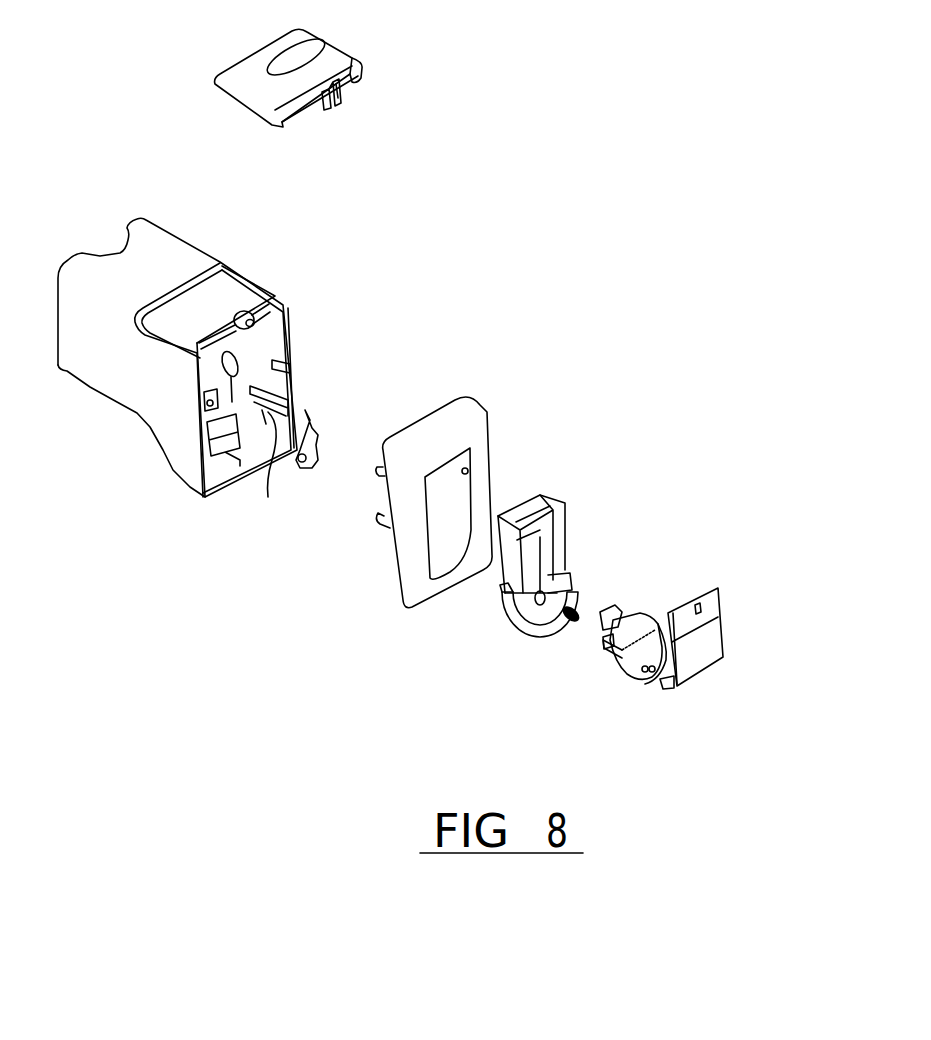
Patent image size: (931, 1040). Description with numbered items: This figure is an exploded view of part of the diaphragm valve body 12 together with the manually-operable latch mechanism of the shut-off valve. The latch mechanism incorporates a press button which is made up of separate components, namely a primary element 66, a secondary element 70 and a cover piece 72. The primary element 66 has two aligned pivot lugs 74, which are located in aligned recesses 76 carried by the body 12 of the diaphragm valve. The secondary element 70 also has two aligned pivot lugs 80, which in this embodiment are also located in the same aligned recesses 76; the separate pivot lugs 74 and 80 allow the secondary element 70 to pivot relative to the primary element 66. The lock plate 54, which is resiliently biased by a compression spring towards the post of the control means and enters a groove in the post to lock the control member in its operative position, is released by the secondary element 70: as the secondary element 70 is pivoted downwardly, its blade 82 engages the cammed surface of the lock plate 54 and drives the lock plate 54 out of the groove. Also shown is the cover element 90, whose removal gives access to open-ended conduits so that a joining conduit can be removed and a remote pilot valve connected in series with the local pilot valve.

The body 12 is at (150, 410).
The lock plate 54 is at (320, 430).
The primary element 66 is at (543, 500).
The secondary element 70 is at (640, 613).
The cover piece 72 is at (707, 641).
The pivot lugs 74 is at (503, 593).
The aligned recesses 76 is at (230, 432).
The pivot lugs 80 is at (603, 645).
The blade 82 is at (603, 607).
The cover element 90 is at (340, 52).